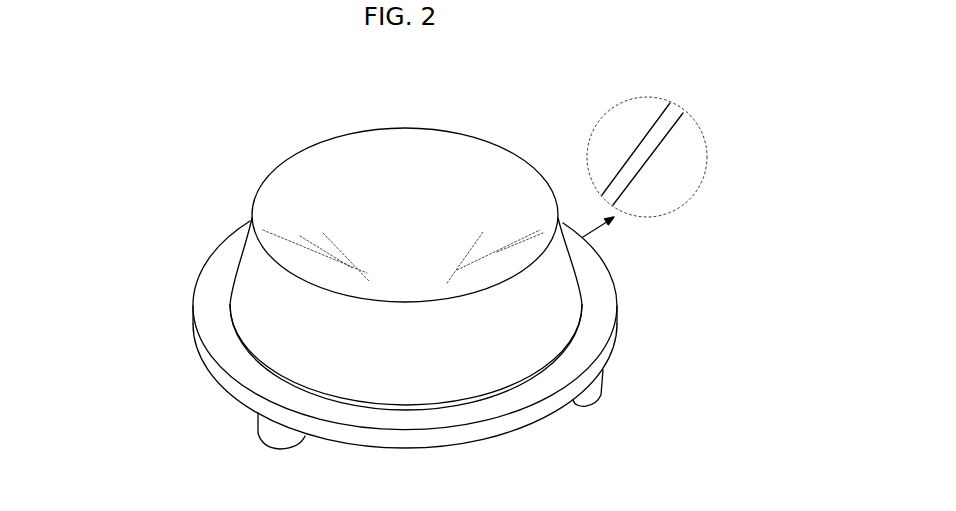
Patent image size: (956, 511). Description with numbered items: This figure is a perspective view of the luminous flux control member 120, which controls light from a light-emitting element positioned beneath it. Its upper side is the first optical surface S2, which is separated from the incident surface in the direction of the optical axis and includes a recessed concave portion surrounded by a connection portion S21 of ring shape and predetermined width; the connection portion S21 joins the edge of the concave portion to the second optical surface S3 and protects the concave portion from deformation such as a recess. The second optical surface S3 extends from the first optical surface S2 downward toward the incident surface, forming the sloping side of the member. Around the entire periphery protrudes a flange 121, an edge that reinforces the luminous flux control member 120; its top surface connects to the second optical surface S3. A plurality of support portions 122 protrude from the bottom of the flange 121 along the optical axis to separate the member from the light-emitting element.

The luminous flux control member 120 is at (477, 135).
The first optical surface S2 is at (513, 181).
The connection portion S21 is at (660, 157).
The flange 121 is at (603, 293).
The second optical surface S3 is at (262, 297).
The support portions 122 is at (602, 391).